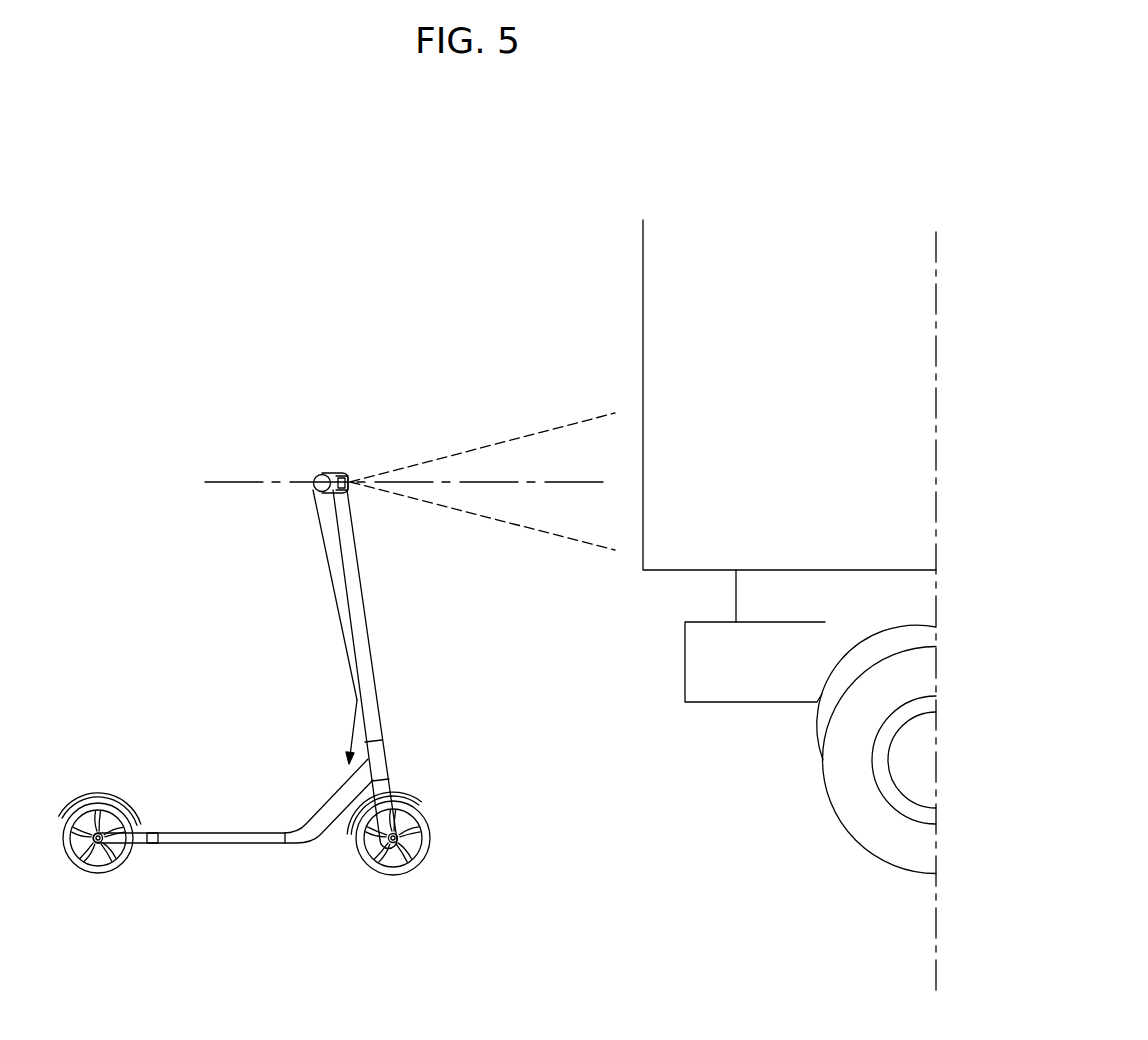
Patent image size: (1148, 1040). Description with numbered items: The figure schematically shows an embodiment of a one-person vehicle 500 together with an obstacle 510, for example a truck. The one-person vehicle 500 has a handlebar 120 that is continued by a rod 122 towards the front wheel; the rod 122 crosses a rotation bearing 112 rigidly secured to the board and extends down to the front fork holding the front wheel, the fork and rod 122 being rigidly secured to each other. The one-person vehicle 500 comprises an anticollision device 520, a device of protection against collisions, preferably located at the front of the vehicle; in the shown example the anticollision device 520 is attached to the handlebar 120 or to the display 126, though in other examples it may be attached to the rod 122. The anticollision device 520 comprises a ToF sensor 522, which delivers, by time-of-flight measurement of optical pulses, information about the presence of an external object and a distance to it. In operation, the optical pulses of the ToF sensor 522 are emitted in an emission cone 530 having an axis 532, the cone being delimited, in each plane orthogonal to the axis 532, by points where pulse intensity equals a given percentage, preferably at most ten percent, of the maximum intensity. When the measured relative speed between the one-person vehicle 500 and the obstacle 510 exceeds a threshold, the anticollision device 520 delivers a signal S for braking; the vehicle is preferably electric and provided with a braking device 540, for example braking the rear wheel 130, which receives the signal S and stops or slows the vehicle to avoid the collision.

The one-person vehicle 500 is at (261, 661).
The obstacle 510 is at (643, 308).
The anticollision device 520 is at (352, 473).
The ToF sensor 522 is at (347, 490).
The emission cone 530 is at (470, 450).
The axis 532 is at (538, 482).
The braking device 540 is at (153, 843).
The handlebar 120 is at (316, 476).
The display 126 is at (335, 472).
The rod 122 is at (372, 688).
The rotation bearing 112 is at (380, 757).
The rear wheel 130 is at (101, 873).
The signal S is at (342, 735).